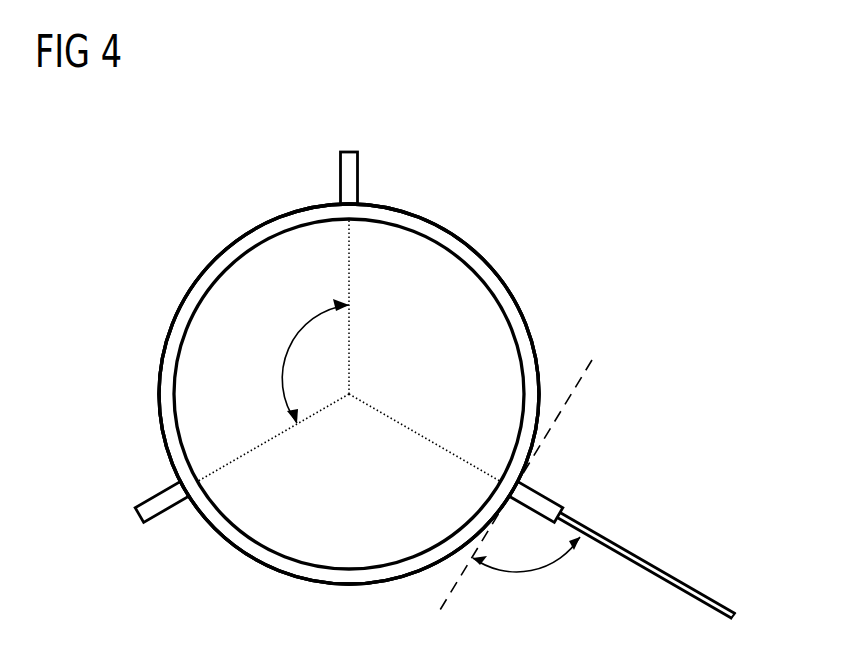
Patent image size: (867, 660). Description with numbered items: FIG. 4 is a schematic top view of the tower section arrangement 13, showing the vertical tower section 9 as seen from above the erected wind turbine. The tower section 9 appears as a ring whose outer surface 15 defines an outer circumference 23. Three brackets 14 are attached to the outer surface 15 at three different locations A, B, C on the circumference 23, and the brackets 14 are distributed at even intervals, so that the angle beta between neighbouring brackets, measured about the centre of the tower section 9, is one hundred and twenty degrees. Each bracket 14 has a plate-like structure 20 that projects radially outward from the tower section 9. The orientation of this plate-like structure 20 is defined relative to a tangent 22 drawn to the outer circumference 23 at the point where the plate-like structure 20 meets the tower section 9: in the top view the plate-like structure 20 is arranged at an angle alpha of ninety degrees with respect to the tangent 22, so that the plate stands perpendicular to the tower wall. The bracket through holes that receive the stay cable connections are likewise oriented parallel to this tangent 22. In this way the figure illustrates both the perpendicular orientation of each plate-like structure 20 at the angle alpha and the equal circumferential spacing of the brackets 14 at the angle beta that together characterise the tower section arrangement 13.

The vertical tower section 9 is at (474, 245).
The tower section arrangement 13 is at (627, 148).
The bracket 14 is at (392, 362).
The outer surface 15 is at (514, 289).
The plate-like structure 20 is at (358, 168).
The tangent 22 is at (584, 373).
The outer circumference 23 is at (529, 322).
The location A is at (509, 483).
The location B is at (349, 206).
The location C is at (191, 488).
The angle α alpha is at (535, 571).
The angle β beta is at (287, 350).